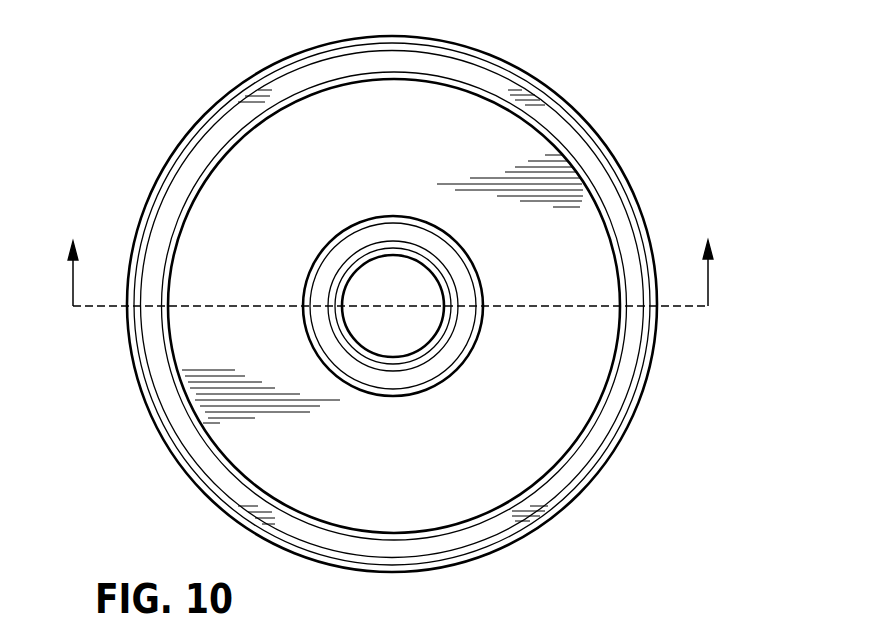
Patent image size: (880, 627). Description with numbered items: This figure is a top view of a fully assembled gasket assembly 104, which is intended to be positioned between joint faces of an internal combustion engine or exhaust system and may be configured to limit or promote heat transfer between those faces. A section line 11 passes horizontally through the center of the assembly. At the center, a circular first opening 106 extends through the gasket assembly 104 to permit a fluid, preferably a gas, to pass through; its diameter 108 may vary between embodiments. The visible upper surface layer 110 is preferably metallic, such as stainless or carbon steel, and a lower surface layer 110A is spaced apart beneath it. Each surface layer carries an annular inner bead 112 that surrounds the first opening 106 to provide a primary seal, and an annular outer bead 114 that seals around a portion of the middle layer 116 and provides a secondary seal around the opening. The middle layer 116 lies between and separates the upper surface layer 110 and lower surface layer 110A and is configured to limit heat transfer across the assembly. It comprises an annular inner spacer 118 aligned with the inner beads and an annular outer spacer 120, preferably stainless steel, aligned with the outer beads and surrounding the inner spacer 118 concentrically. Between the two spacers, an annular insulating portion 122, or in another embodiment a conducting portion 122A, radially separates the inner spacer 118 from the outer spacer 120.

The section line 11- 11 is at (389, 249).
The gasket assembly 104 is at (163, 128).
The first opening 106 is at (390, 273).
The diameter 108 is at (435, 274).
The upper surface layer 110 is at (625, 387).
The lower surface layer 110A is at (620, 456).
The inner bead 112 is at (328, 341).
The outer bead 114 is at (240, 497).
The middle layer 116 is at (305, 518).
The inner spacer 118 is at (412, 380).
The outer spacer 120 is at (423, 548).
The insulating portion 122 is at (509, 452).
The conducting portion 122A is at (394, 306).